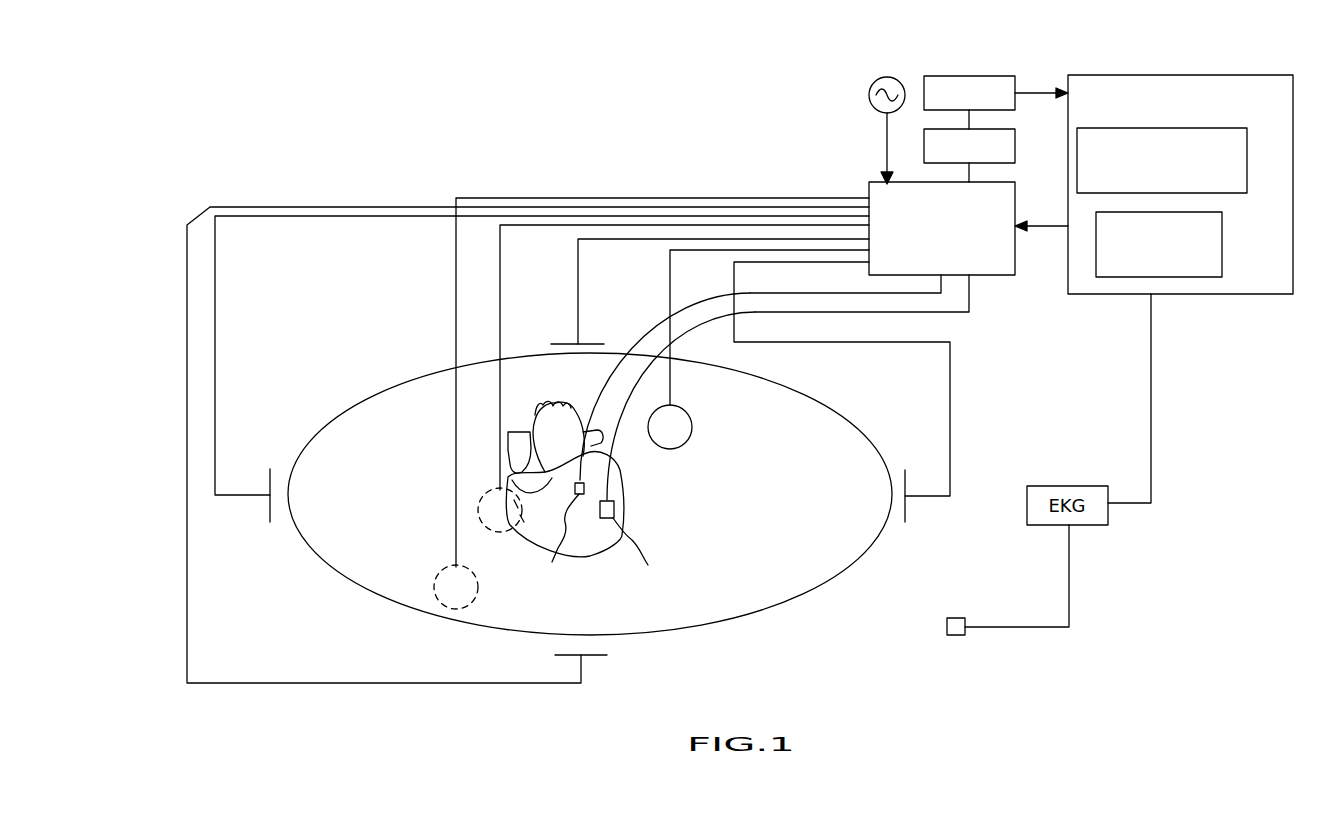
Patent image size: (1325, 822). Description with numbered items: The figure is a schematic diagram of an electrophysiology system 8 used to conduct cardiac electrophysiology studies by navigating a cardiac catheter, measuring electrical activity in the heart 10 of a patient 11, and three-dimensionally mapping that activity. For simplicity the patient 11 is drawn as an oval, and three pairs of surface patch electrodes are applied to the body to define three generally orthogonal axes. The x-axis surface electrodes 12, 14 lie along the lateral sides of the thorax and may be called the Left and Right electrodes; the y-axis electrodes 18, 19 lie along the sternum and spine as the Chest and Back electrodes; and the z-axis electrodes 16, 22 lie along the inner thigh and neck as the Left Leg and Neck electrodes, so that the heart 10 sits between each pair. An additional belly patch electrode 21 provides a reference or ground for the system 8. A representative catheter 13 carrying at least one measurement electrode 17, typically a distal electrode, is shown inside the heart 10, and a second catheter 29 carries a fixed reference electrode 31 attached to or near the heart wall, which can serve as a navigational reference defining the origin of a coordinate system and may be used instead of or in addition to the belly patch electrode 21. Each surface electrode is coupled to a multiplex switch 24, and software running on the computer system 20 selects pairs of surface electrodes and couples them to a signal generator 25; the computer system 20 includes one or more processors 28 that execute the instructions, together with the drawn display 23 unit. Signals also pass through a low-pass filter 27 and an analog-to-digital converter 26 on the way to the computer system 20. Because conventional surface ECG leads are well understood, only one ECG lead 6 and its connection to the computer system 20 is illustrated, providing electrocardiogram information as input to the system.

The electrophysiology system 8 is at (263, 118).
The signal generator 25 is at (871, 82).
The analog to digital converter 26 is at (988, 76).
The low pass filter 27 is at (1015, 150).
The multiplex switch 24 is at (931, 251).
The computer system 20 is at (1252, 278).
The processor 28 is at (1151, 182).
The display 23 is at (1148, 267).
The ECG lead 6 is at (957, 636).
The patient 11 is at (812, 397).
The belly patch electrode 21 is at (455, 507).
The y-axis electrode 18 is at (268, 507).
The x-axis surface electrode 14 is at (583, 663).
The z-axis electrode 22 is at (500, 278).
The x-axis surface electrode 12 is at (574, 342).
The z-axis electrode 16 is at (672, 382).
The y-axis electrode 19 is at (908, 510).
The catheter 13 is at (971, 298).
The second catheter 29 is at (595, 372).
The heart 10 is at (616, 505).
The fixed reference electrode 31 is at (558, 542).
The catheter electrode 17 is at (638, 554).